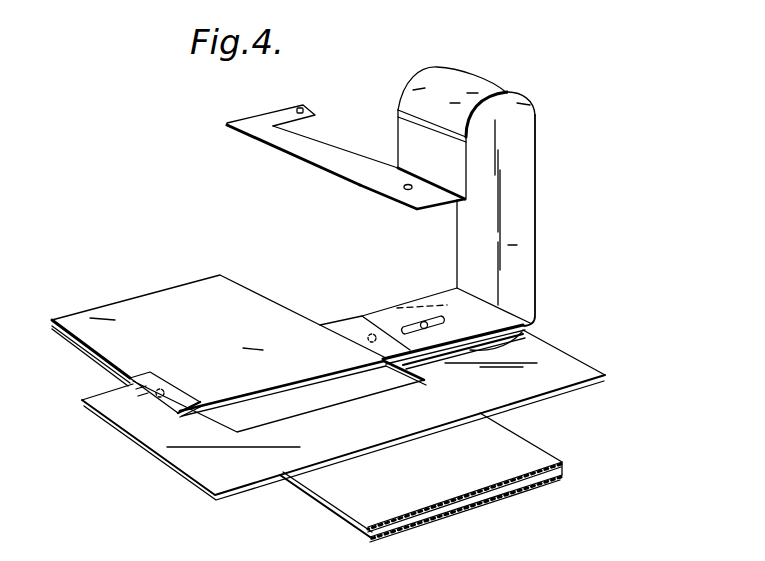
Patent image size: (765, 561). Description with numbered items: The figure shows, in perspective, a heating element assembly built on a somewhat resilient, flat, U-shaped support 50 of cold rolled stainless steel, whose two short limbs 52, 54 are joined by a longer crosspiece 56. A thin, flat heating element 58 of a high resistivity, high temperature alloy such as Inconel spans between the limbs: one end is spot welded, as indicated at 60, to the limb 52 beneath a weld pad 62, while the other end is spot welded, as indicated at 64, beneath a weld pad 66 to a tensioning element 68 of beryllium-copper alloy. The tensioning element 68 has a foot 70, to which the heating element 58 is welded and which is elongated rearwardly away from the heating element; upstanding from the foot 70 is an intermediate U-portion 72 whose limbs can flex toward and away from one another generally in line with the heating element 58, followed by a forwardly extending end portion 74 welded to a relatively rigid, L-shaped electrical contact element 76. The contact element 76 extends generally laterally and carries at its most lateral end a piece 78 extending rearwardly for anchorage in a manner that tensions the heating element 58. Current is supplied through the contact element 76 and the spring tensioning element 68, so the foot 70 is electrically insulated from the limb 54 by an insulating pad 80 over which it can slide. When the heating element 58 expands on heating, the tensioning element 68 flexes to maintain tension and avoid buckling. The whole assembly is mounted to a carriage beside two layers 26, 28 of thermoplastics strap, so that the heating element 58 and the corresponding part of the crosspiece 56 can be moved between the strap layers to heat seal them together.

The strap layer 26 is at (92, 356).
The strap layer 28 is at (260, 300).
The U-shaped support 50 is at (590, 357).
The limb 52 is at (125, 423).
The limb 54 is at (540, 348).
The crosspiece 56 is at (400, 433).
The heating element 58 is at (238, 361).
The spot weld 60 is at (158, 397).
The weld pad 62 is at (140, 393).
The spot weld 64 is at (385, 313).
The weld pad 66 is at (342, 323).
The tensioning element 68 is at (541, 170).
The foot 70 is at (428, 303).
The intermediate U-portion 72 is at (522, 96).
The end portion 74 is at (442, 207).
The contact element 76 is at (318, 157).
The piece 78 is at (286, 114).
The insulating pad 80 is at (527, 330).